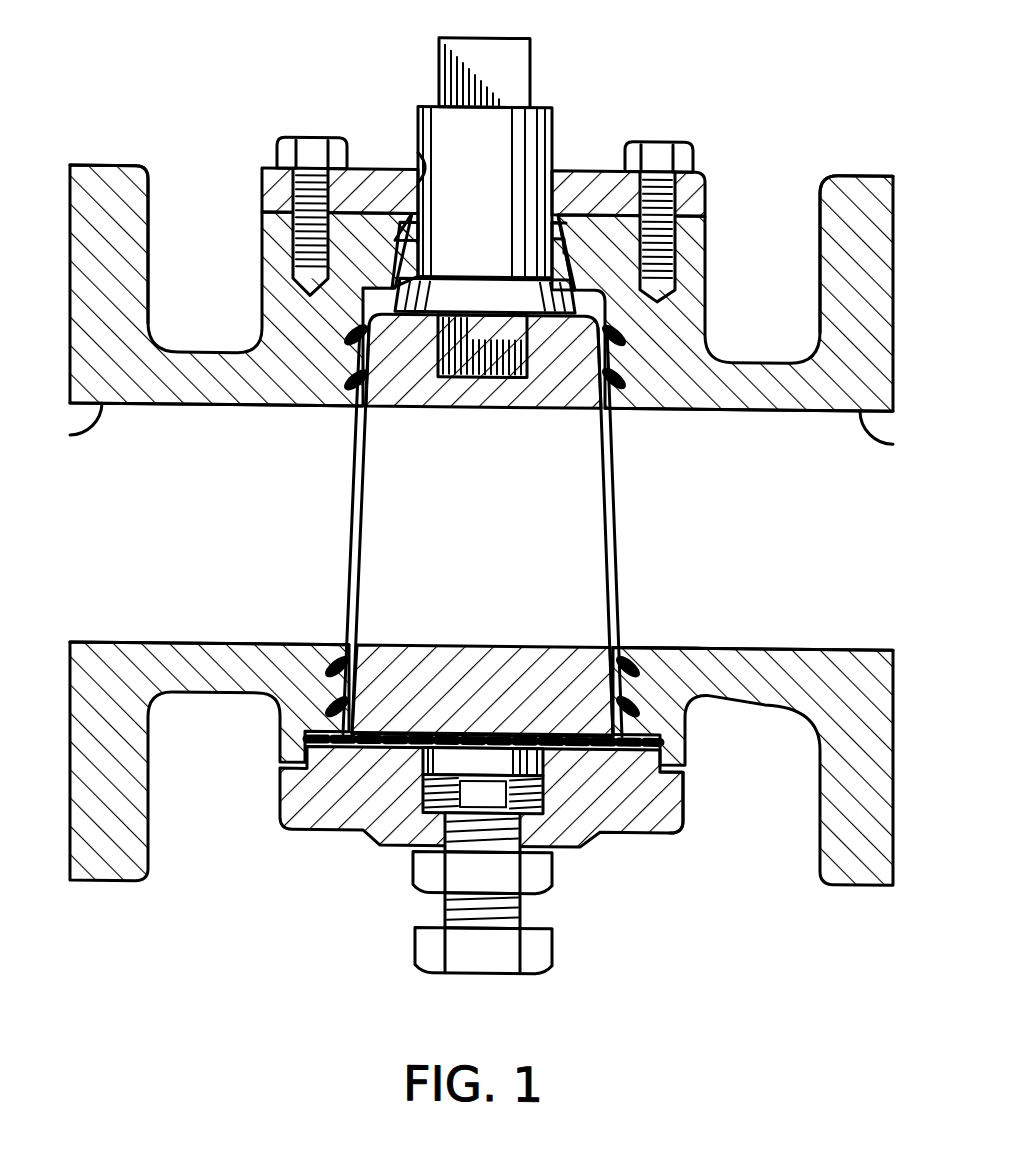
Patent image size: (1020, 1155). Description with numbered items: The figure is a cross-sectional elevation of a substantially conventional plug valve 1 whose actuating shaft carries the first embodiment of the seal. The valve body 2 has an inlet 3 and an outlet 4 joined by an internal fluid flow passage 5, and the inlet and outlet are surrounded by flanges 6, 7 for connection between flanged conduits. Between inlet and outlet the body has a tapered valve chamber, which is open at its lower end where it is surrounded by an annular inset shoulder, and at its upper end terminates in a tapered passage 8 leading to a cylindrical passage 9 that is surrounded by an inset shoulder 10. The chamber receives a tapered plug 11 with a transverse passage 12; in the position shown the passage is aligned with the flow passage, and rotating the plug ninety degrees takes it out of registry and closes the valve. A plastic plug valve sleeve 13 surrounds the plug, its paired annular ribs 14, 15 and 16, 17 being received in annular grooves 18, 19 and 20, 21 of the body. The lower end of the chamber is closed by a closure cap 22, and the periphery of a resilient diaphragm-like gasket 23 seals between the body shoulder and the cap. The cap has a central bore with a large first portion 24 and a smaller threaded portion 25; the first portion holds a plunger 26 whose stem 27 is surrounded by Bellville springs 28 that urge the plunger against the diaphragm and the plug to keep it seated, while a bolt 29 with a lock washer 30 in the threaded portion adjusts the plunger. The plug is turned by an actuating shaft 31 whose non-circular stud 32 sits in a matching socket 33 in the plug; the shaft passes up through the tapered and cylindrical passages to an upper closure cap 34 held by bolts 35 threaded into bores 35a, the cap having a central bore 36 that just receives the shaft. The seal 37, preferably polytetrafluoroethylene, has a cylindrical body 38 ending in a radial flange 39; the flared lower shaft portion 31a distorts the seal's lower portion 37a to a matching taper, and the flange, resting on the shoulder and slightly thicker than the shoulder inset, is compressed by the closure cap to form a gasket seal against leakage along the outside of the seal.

The plug valve 1 is at (212, 704).
The body 2 is at (170, 693).
The inlet 3 is at (74, 423).
The outlet 4 is at (886, 430).
The fluid flow passage 5 is at (741, 574).
The flange / tapered valve chamber 6 is at (135, 168).
The flange / annular inset shoulder 7 is at (838, 170).
The tapered passage 8 is at (392, 275).
The cylindrical passage 9 is at (402, 233).
The inset shoulder 10 is at (618, 247).
The tapered plug 11 is at (590, 645).
The transverse passage 12 is at (550, 406).
The plug valve sleeve 13 is at (635, 685).
The annular rib 14 is at (340, 393).
The annular rib 15 is at (348, 392).
The annular rib 16 is at (335, 658).
The annular rib 17 is at (305, 658).
The annular groove 18 is at (630, 374).
The annular groove 19 is at (622, 386).
The annular groove 20 is at (630, 655).
The annular groove 21 is at (660, 684).
The closure cap 22 is at (665, 815).
The diaphragm-like gasket 23 is at (606, 746).
The first bore portion 24 is at (486, 813).
The threaded bore portion 25 is at (442, 837).
The plunger 26 is at (470, 768).
The stem 27 is at (485, 802).
The Bellville springs 28 is at (435, 811).
The bolt 29 is at (432, 948).
The lock washer 30 is at (545, 866).
The actuating shaft 31 is at (545, 119).
The tapered portion 31a is at (405, 296).
The non-circular stud 32 is at (520, 330).
The socket 33 is at (503, 376).
The closure cap 34 is at (595, 177).
The bolts 35 is at (483, 199).
The bores 35a is at (296, 248).
The central bore 36 is at (418, 162).
The seal 37 is at (555, 218).
The lower portion of the seal 37a is at (560, 279).
The cylindrical body 38 is at (560, 239).
The flange 39 is at (575, 210).